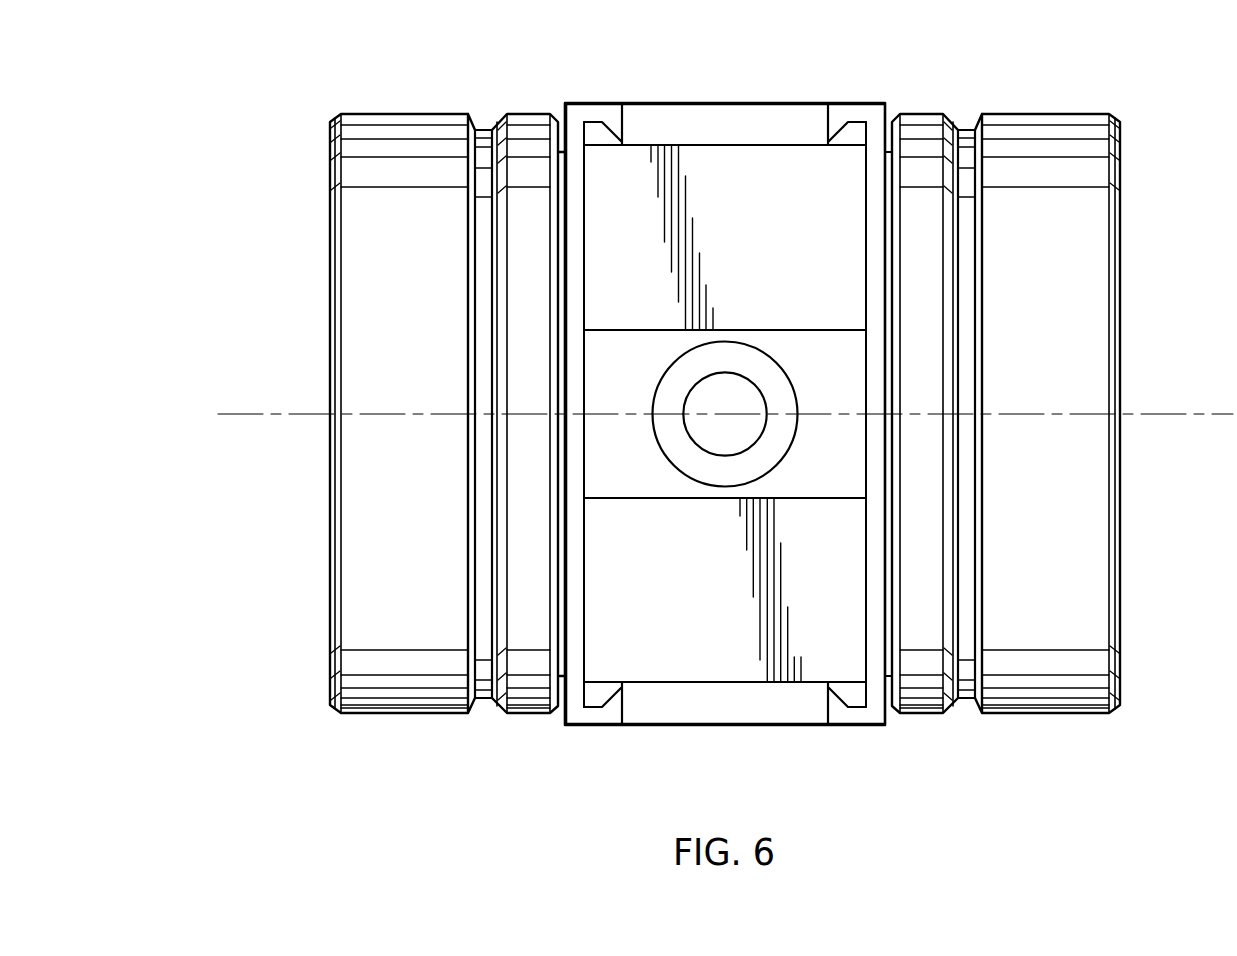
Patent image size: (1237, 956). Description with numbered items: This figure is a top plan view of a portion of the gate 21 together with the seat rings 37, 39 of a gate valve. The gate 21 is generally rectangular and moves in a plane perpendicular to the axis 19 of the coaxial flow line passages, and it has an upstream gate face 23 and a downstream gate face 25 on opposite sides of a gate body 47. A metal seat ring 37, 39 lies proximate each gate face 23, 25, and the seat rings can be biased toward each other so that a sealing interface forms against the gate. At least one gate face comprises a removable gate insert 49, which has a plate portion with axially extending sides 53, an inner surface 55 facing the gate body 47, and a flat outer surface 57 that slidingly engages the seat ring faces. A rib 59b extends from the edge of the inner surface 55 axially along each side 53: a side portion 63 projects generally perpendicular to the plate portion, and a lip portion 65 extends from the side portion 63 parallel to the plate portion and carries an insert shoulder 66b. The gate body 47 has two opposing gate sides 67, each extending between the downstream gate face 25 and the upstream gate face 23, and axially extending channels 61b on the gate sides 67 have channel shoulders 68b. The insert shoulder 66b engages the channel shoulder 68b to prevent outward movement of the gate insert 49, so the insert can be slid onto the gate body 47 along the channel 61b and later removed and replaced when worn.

The axis 19 is at (243, 413).
The gate 21 is at (726, 653).
The upstream gate face 23 is at (565, 510).
The downstream gate face 25 is at (887, 475).
The seat ring 37 is at (388, 715).
The seat ring 39 is at (1048, 715).
The gate body 47 is at (680, 633).
The gate insert 49 is at (875, 293).
The side 53 is at (567, 728).
The inner surface 55 is at (584, 256).
The outer surface 57 is at (887, 522).
The rib 59b is at (858, 110).
The channel 61b is at (838, 707).
The side portion 63 is at (590, 110).
The lip portion 65 is at (835, 125).
The insert shoulder 66b is at (850, 135).
The gate side 67 is at (695, 727).
The channel shoulder 68b is at (610, 128).